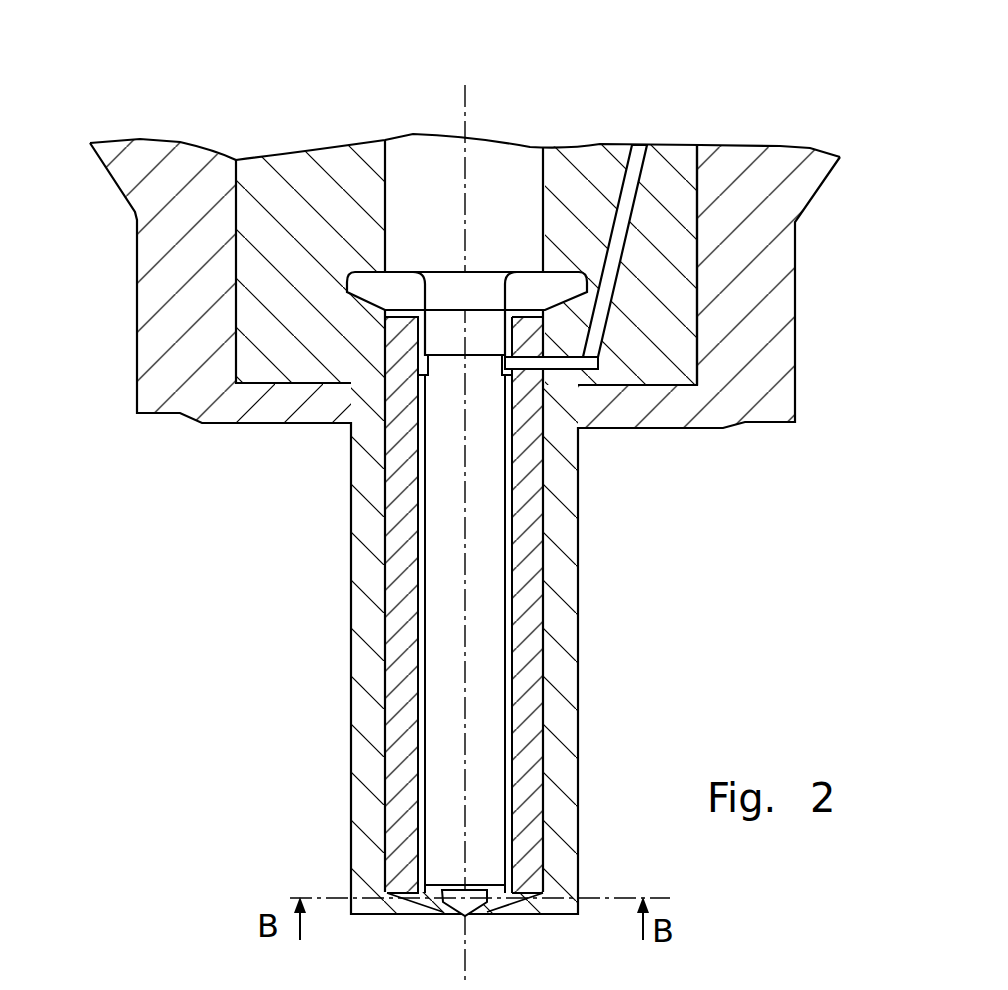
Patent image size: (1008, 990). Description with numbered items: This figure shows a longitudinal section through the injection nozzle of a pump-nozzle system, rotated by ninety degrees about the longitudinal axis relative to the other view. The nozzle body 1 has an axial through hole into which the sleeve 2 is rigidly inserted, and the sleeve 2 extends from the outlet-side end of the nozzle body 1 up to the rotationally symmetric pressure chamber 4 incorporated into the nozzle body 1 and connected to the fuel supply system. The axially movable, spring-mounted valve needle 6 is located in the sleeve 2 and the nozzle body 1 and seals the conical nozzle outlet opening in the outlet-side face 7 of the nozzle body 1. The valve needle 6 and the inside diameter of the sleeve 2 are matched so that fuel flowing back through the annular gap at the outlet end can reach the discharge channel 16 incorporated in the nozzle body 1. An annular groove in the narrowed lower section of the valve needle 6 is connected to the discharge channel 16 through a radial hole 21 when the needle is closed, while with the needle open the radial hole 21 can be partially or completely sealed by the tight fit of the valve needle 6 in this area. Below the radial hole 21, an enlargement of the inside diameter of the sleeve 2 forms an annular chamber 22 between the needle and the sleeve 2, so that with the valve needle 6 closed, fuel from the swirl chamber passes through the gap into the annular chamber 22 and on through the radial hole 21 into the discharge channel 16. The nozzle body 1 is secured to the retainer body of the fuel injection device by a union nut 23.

The nozzle body 1 is at (370, 487).
The sleeve 2 is at (403, 568).
The pressure chamber 4 is at (398, 294).
The valve needle 6 is at (463, 660).
The outlet-side face 7 is at (422, 913).
The discharge channel 16 is at (628, 212).
The radial hole 21 is at (568, 362).
The annular chamber 22 is at (422, 737).
The union nut 23 is at (743, 375).